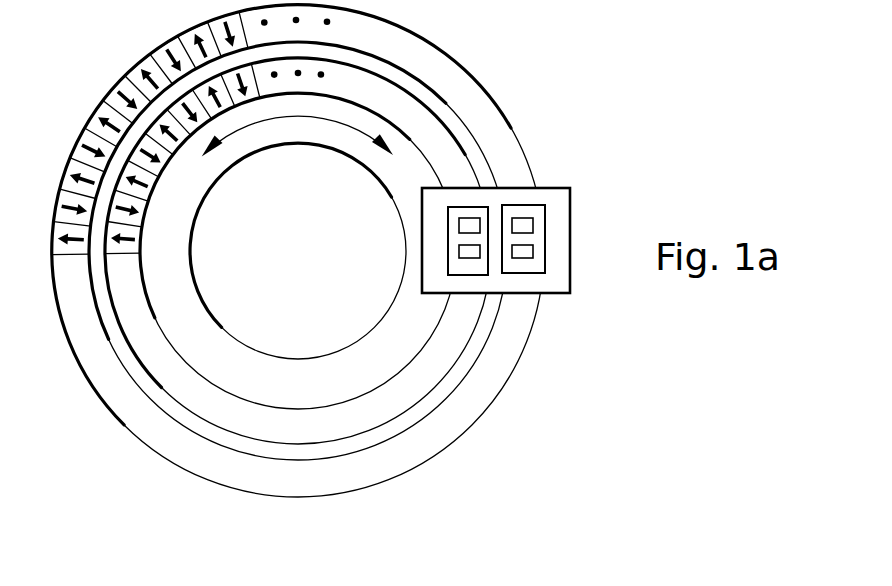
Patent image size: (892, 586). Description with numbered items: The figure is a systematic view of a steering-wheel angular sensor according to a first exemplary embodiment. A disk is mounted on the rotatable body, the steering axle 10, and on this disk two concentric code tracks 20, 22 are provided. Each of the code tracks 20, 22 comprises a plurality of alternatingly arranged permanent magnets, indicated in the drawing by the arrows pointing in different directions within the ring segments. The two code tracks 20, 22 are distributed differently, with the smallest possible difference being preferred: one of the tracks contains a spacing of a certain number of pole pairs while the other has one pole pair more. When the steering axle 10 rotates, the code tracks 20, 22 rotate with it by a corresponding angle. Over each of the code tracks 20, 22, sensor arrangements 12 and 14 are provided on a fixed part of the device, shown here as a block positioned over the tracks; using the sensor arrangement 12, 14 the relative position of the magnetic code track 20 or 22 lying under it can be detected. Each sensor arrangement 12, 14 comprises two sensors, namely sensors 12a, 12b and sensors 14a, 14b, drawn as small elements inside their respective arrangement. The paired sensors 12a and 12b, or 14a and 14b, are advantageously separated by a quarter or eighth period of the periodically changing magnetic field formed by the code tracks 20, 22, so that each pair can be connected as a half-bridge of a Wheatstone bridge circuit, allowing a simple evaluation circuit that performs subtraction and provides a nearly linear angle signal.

The steering axle 10 is at (352, 323).
The code track 20 is at (112, 383).
The code track 22 is at (190, 393).
The sensor arrangement 12 is at (533, 210).
The sensor arrangement 14 is at (470, 210).
The sensor 12a is at (533, 225).
The sensor 12b is at (520, 258).
The sensor 14a is at (465, 225).
The sensor 14b is at (468, 258).